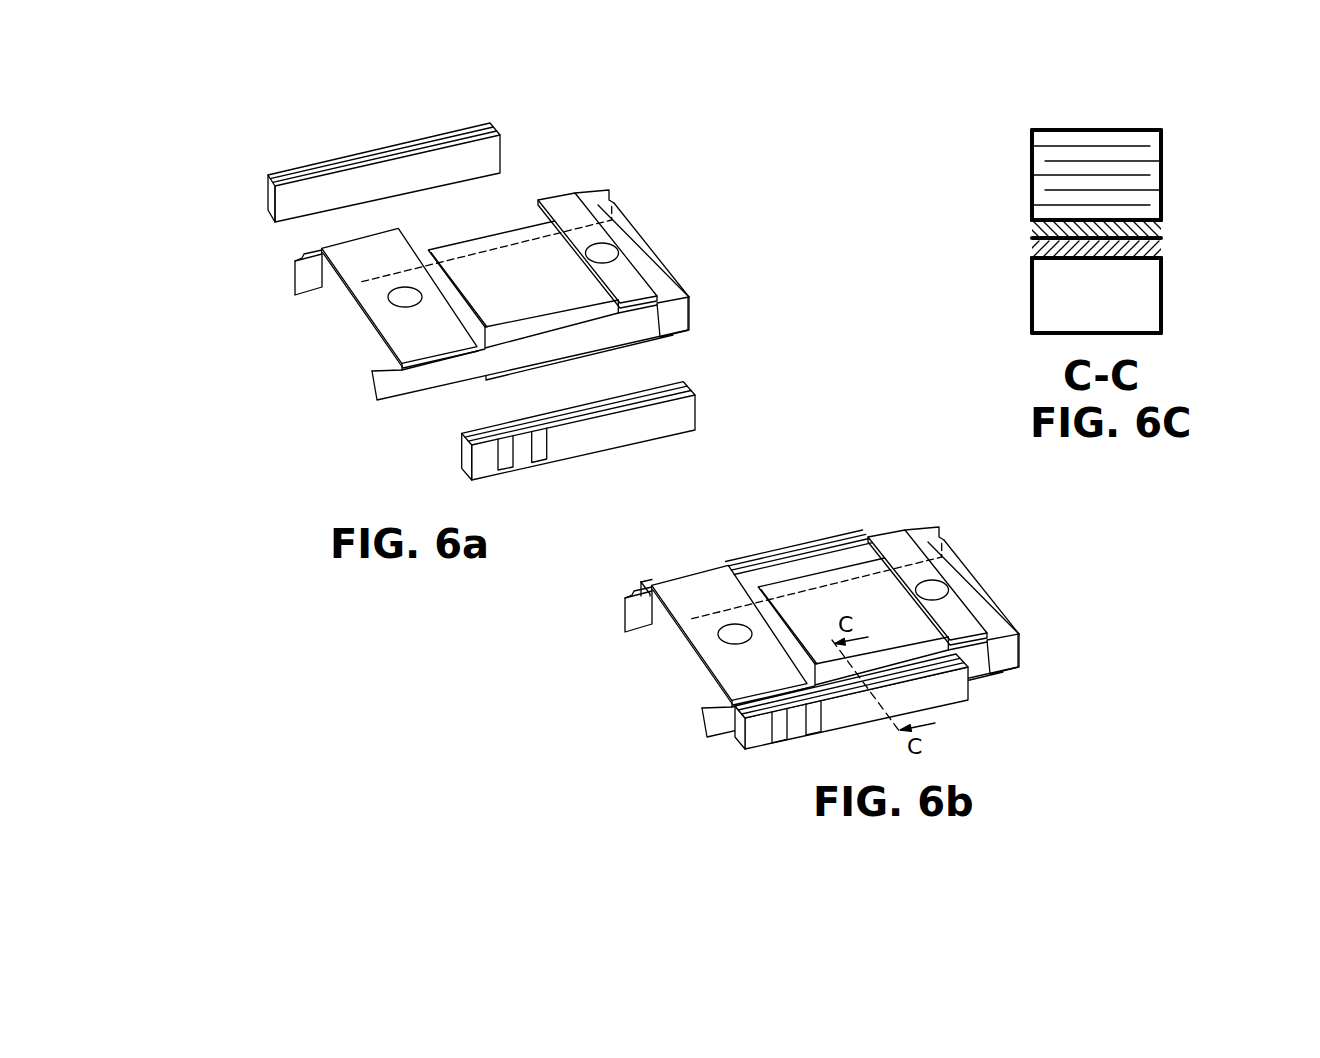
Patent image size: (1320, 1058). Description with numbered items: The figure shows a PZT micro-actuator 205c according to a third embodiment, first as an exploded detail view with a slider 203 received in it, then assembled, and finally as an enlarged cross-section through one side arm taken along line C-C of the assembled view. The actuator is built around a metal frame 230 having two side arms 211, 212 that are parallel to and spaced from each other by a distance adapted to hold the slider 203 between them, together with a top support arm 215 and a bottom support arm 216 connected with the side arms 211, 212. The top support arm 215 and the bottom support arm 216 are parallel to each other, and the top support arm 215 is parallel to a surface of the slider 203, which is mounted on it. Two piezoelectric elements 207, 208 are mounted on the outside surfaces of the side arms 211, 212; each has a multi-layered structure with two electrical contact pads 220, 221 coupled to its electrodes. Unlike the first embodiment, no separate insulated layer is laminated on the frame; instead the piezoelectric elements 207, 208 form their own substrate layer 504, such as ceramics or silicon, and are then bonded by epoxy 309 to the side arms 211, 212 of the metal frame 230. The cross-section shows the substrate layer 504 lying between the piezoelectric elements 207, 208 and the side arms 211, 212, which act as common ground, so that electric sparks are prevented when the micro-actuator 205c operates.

In FIG. 6a, the PZT micro-actuator 205c is at (275, 98).
In FIG. 6a, the piezoelectric element 207 is at (325, 309).
In FIG. 6b, the piezoelectric element 207 is at (783, 553).
In FIG. 6C, the piezoelectric element 207 is at (1018, 132).
In FIG. 6a, the piezoelectric element 208 is at (650, 454).
In FIG. 6b, the piezoelectric element 208 is at (910, 702).
In FIG. 6C, the piezoelectric element 208 is at (1096, 175).
In FIG. 6a, the substrate layer 504 is at (271, 196).
In FIG. 6C, the substrate layer 504 is at (1148, 217).
In FIG. 6a, the side arm 211 is at (295, 262).
In FIG. 6b, the side arm 211 is at (943, 527).
In FIG. 6C, the side arm 211 is at (1137, 273).
In FIG. 6a, the side arm 212 is at (683, 296).
In FIG. 6b, the side arm 212 is at (1018, 625).
In FIG. 6C, the side arm 212 is at (1096, 295).
In FIG. 6a, the bottom support arm 216 is at (377, 291).
In FIG. 6b, the bottom support arm 216 is at (707, 627).
In FIG. 6a, the top support arm 215 is at (577, 215).
In FIG. 6b, the top support arm 215 is at (907, 552).
In FIG. 6a, the metal frame 230 is at (514, 211).
In FIG. 6b, the metal frame 230 is at (893, 518).
In FIG. 6a, the slider 203 is at (645, 256).
In FIG. 6b, the slider 203 is at (973, 588).
In FIG. 6a, the electrical contact pad 220 is at (507, 470).
In FIG. 6a, the electrical contact pad 221 is at (537, 459).
In FIG. 6C, the epoxy 309 is at (1147, 252).